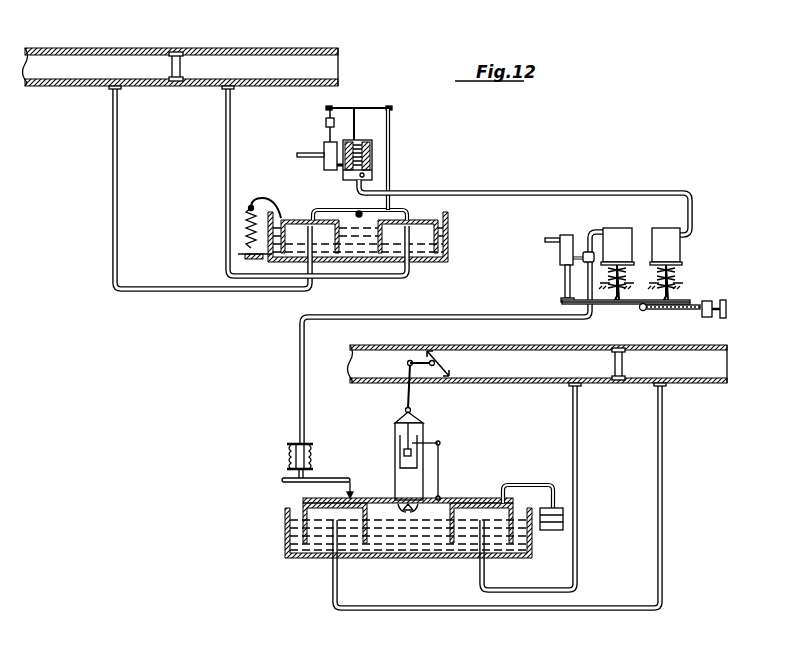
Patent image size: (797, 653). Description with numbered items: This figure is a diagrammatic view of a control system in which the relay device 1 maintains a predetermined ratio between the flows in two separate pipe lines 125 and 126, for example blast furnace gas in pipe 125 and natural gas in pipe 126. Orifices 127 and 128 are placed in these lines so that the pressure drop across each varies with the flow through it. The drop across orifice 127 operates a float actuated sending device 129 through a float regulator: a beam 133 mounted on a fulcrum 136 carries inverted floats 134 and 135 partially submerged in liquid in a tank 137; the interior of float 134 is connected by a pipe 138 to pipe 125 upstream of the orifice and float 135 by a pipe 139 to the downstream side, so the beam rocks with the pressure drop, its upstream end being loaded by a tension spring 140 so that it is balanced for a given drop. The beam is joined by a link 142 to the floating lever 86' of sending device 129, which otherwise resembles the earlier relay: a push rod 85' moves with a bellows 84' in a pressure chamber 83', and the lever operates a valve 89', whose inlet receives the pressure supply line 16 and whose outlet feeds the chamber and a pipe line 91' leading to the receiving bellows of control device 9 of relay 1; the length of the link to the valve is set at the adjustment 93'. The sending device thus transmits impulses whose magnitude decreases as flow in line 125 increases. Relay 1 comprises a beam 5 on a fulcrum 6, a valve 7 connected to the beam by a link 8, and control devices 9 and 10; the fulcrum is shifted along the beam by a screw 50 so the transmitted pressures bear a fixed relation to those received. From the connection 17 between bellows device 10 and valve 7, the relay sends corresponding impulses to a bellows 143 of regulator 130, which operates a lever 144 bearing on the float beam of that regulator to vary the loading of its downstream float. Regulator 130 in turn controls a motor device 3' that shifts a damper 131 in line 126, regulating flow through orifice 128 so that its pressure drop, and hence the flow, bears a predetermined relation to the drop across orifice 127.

The pipe line 125 is at (283, 41).
The orifice 127 is at (172, 56).
The vessel or tank 137 is at (443, 251).
The inverted float 134 is at (305, 218).
The inverted float 135 is at (436, 222).
The tension spring 140 is at (250, 213).
The beam 133 is at (348, 210).
The fulcrum 136 is at (360, 215).
The pipe 138 is at (173, 288).
The pipe 139 is at (224, 240).
The floating lever 86' is at (367, 94).
The link 142 is at (390, 168).
The push rod 85' is at (372, 135).
The pressure chamber 83' is at (343, 163).
The bellows 84' is at (395, 156).
The float actuated sending device 129 is at (436, 144).
The link length adjustment 93' is at (312, 111).
The valve 89' is at (315, 148).
The pipe line 91' is at (524, 203).
The relay device 1 is at (654, 219).
The pipe 17 is at (548, 319).
The supply line 16 is at (543, 230).
The valve 7 is at (551, 262).
The link 8 is at (565, 285).
The control device 10 is at (627, 254).
The control device 9 is at (671, 256).
The beam 5 is at (606, 304).
The fulcrum 6 is at (647, 310).
The screw 50 is at (682, 309).
The pipe line 126 is at (693, 386).
The orifice 128 is at (618, 385).
The damper 131 is at (430, 354).
The motor device 3' is at (403, 460).
The regulator 130 is at (483, 481).
The bellows 143 is at (289, 461).
The lever 144 is at (326, 478).